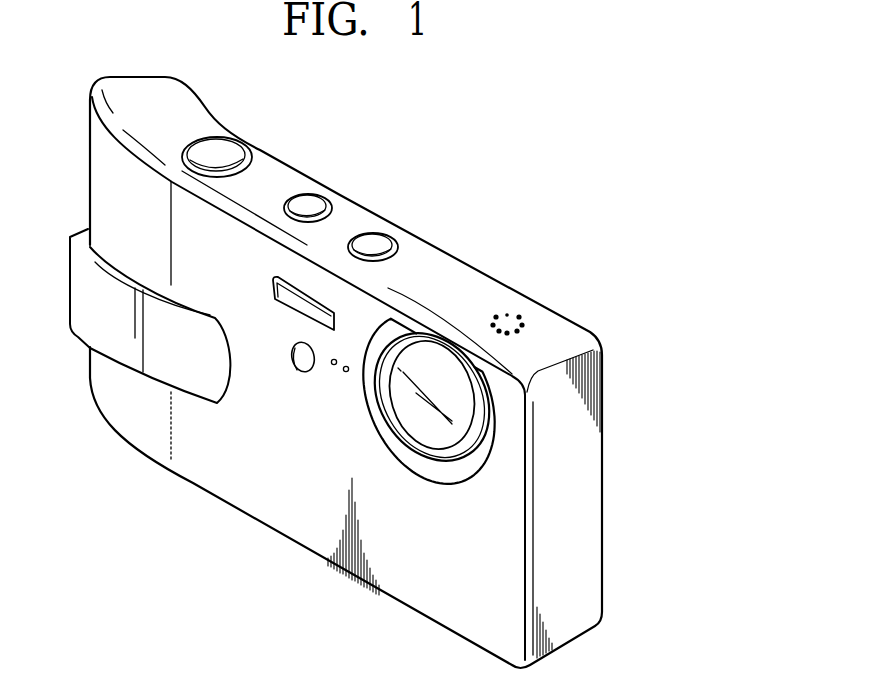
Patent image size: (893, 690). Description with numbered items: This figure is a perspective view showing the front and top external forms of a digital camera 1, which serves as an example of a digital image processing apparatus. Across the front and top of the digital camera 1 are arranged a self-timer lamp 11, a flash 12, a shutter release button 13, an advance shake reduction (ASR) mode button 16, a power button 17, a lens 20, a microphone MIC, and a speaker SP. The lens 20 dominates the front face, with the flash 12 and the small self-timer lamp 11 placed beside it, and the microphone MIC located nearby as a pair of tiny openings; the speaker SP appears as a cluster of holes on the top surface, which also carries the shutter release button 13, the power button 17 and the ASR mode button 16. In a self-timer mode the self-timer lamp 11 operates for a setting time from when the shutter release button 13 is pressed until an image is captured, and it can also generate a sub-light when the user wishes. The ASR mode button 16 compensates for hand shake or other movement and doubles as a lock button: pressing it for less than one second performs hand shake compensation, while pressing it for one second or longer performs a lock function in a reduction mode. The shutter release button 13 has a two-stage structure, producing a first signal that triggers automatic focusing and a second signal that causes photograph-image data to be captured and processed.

The digital camera 1 is at (512, 176).
The shutter release button 13 is at (229, 152).
The power button 17 is at (313, 203).
The advance shake reduction (ASR) mode button 16 is at (380, 240).
The speaker SP is at (518, 313).
The flash 12 is at (297, 297).
The self-timer lamp 11 is at (303, 366).
The microphone MIC is at (345, 372).
The lens 20 is at (440, 430).